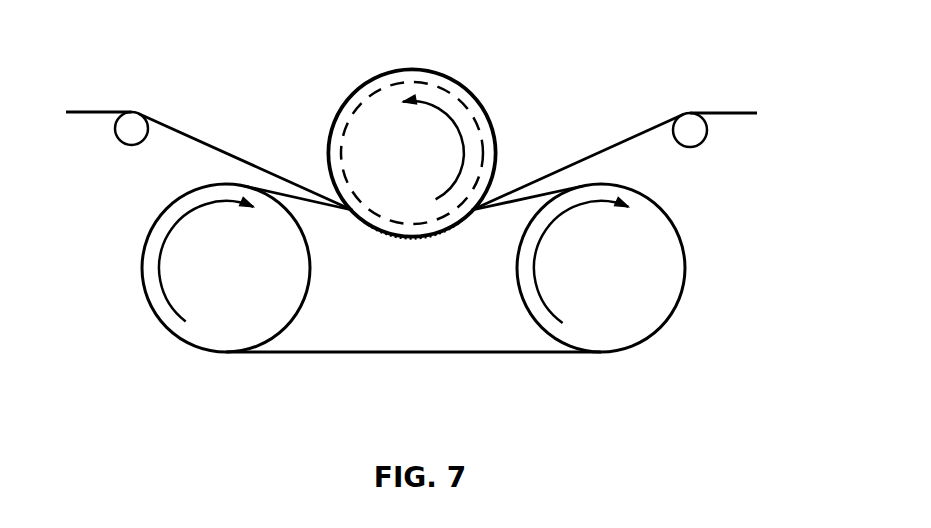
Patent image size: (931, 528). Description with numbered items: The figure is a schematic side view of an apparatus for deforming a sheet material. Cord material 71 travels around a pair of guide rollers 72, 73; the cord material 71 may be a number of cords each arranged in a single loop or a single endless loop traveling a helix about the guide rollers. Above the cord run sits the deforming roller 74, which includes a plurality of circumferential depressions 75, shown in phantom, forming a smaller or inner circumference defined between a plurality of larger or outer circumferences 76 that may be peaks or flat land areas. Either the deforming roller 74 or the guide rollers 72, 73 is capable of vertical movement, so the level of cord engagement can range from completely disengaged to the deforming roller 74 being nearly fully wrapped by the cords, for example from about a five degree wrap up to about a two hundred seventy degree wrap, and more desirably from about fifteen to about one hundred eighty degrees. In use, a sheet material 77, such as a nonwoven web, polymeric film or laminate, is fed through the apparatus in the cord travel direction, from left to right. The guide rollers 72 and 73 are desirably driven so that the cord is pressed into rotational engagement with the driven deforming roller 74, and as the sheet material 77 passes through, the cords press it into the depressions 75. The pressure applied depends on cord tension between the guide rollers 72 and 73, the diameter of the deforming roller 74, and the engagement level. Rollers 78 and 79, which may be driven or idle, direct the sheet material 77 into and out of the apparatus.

The cord material 71 is at (322, 353).
The guide roller 72 is at (208, 284).
The guide roller 73 is at (583, 284).
The deforming roller 74 is at (394, 169).
The circumferential depressions 75 is at (445, 83).
The outer circumferences 76 is at (500, 145).
The sheet material 77 is at (168, 125).
The roller 78 is at (126, 144).
The roller 79 is at (693, 147).